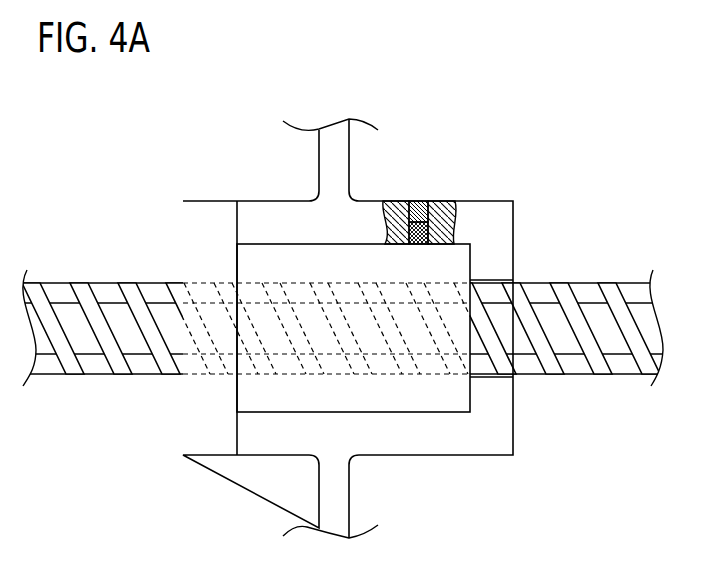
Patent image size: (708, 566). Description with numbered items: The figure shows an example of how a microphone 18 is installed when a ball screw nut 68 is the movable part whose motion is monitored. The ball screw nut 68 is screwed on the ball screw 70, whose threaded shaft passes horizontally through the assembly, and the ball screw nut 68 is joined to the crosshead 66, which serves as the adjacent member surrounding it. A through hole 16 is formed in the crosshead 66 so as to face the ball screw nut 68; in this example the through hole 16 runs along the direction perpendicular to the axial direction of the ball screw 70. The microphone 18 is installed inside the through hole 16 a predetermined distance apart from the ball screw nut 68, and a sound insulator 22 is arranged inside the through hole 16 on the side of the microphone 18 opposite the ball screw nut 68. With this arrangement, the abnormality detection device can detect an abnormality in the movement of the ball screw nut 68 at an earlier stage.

The through hole 16 is at (417, 244).
The microphone 18 is at (409, 233).
The sound insulator 22 is at (417, 214).
The crosshead 66 is at (480, 213).
The ball screw nut 68 is at (412, 393).
The ball screw 70 is at (562, 283).